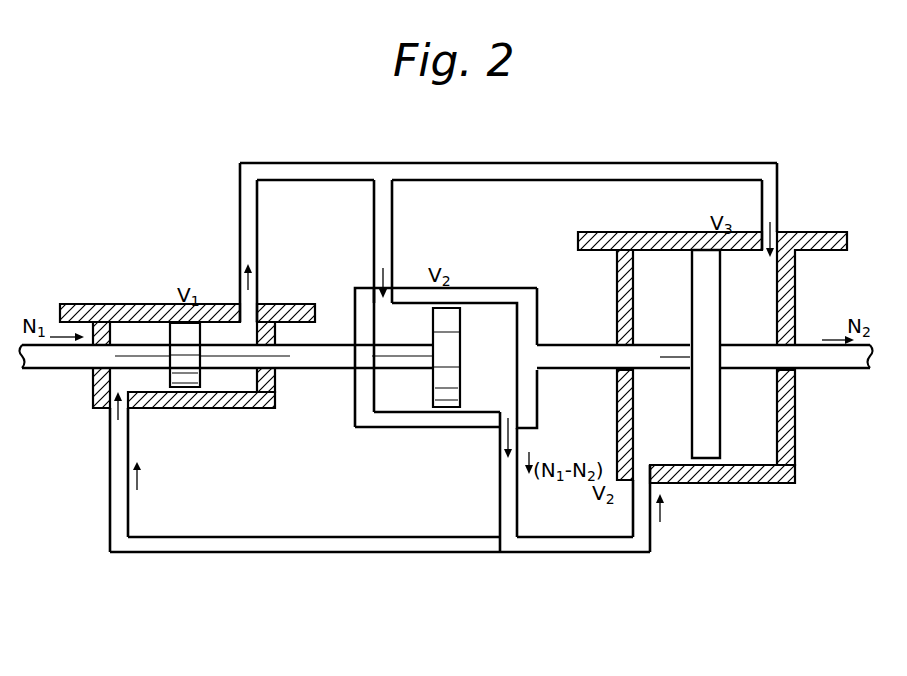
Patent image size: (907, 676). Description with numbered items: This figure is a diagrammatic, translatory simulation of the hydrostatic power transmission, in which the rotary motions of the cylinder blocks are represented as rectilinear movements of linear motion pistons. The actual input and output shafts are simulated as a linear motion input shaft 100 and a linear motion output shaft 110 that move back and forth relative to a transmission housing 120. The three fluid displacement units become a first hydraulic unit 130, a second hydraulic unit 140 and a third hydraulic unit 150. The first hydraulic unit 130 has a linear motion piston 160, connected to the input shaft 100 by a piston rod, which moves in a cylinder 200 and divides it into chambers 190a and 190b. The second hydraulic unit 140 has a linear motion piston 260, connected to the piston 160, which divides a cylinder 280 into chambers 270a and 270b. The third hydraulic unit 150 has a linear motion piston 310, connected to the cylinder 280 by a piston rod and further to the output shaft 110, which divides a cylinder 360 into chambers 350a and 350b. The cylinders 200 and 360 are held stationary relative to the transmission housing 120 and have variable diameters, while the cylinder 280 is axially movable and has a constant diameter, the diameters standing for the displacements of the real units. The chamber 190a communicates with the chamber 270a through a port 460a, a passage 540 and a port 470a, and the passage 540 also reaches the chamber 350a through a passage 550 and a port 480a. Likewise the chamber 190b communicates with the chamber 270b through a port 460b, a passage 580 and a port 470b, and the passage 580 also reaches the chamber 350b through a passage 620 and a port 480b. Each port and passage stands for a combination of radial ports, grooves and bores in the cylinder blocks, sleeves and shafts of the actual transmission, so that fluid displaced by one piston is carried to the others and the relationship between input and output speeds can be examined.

The linear motion input shaft 100 is at (55, 360).
The linear motion output shaft 110 is at (837, 363).
The transmission housing 120 is at (64, 302).
The first hydraulic unit 130 is at (203, 418).
The second hydraulic unit 140 is at (424, 444).
The third hydraulic unit 150 is at (723, 501).
The linear motion piston 160 is at (173, 330).
The chamber 190a is at (117, 320).
The chamber 190b is at (230, 326).
The cylinder 200 is at (237, 413).
The linear motion piston 260 is at (462, 317).
The chamber 270a is at (513, 330).
The chamber 270b is at (378, 308).
The cylinder 280 is at (380, 426).
The linear motion piston 310 is at (695, 250).
The chamber 350a is at (628, 296).
The chamber 350b is at (772, 295).
The cylinder 360 is at (767, 482).
The port 460a is at (117, 470).
The port 460b is at (240, 226).
The port 470a is at (512, 487).
The port 470b is at (390, 220).
The port 480a is at (645, 530).
The port 480b is at (779, 193).
The passage 540 is at (257, 545).
The passage 550 is at (582, 547).
The passage 580 is at (308, 164).
The passage 620 is at (608, 164).